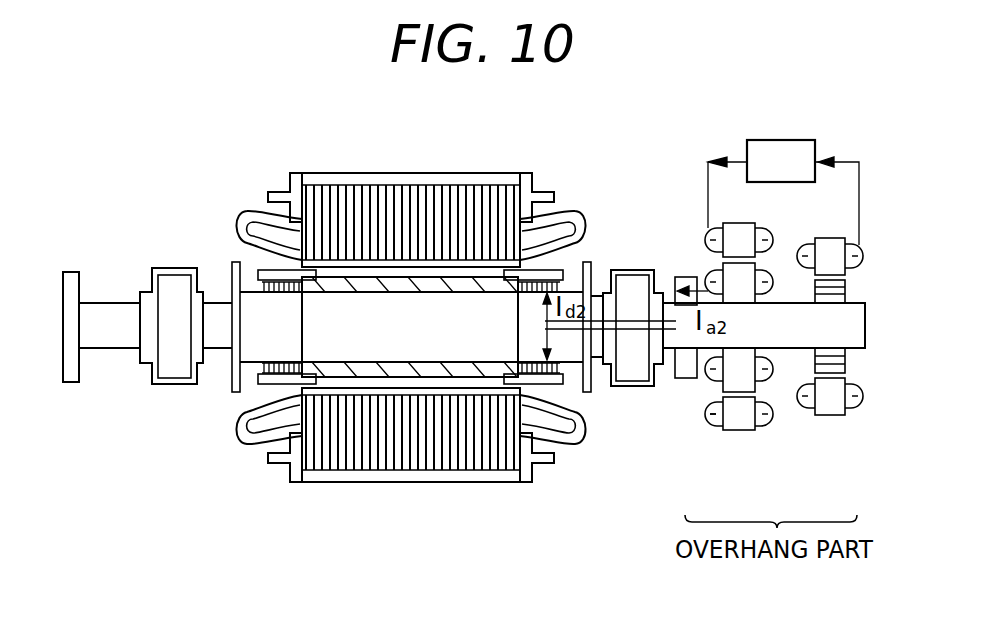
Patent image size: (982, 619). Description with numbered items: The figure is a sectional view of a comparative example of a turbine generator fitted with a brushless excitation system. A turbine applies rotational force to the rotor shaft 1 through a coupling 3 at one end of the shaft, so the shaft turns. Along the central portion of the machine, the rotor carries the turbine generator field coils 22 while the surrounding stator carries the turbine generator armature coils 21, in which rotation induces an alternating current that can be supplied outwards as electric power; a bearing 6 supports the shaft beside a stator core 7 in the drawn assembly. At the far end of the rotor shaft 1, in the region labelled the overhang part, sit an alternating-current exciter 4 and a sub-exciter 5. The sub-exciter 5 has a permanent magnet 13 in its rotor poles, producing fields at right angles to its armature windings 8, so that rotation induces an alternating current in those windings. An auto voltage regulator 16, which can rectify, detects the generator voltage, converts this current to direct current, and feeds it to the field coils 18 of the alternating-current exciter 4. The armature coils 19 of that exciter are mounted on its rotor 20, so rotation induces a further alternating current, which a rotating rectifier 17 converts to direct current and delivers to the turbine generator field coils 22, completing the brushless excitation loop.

The rotor shaft 1 is at (109, 316).
The coupling 3 is at (68, 272).
The alternating-current exciter 4 is at (738, 393).
The sub-exciter 5 is at (827, 373).
The bearing 6 is at (630, 366).
The stator 7 is at (417, 190).
The armature windings 8 is at (863, 257).
The permanent magnet 13 is at (847, 290).
The auto voltage regulator 16 is at (782, 150).
The rotating rectifier 17 is at (685, 281).
The field coils 18 is at (712, 415).
The armature coils 19 is at (703, 284).
The rotor 20 is at (733, 361).
The turbine generator armature coils 21 is at (582, 440).
The turbine generator field coils 22 is at (438, 368).